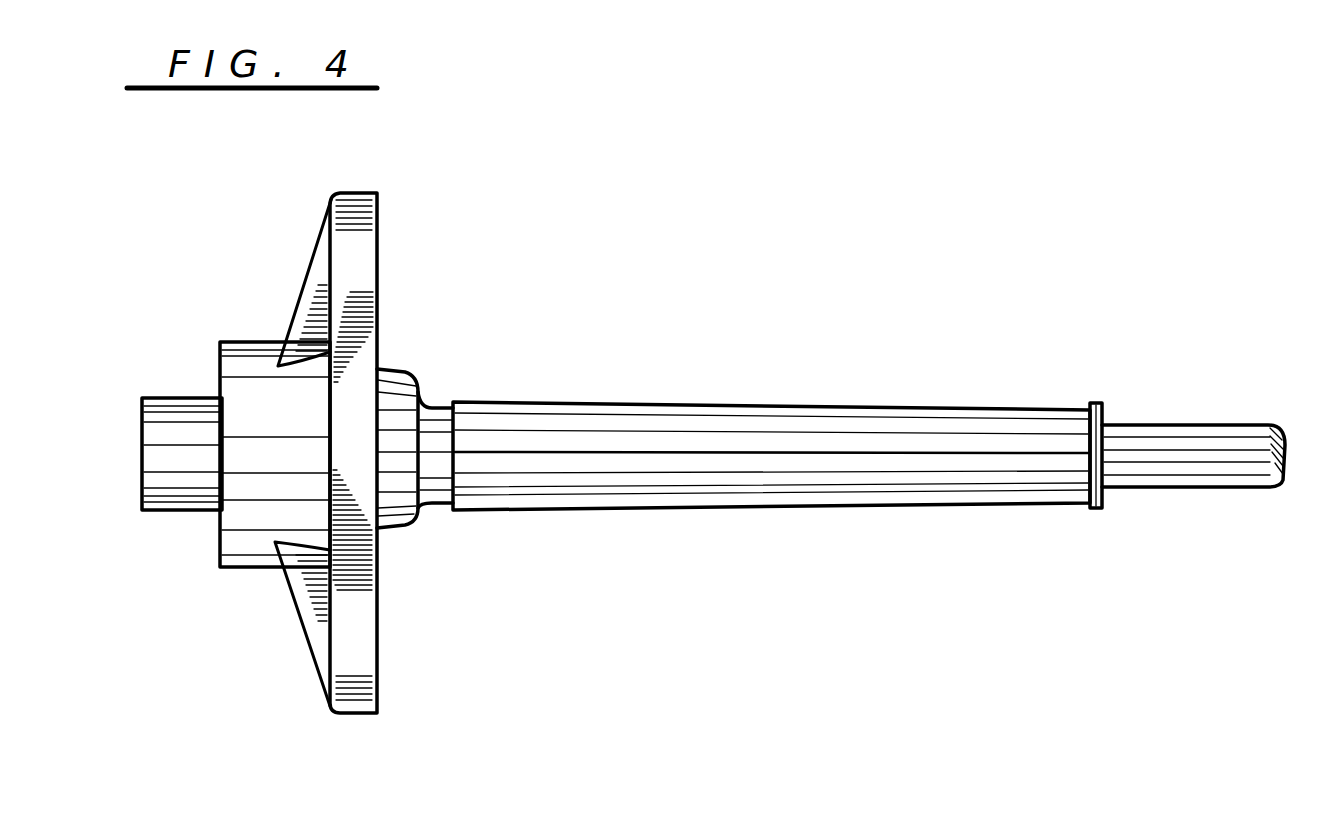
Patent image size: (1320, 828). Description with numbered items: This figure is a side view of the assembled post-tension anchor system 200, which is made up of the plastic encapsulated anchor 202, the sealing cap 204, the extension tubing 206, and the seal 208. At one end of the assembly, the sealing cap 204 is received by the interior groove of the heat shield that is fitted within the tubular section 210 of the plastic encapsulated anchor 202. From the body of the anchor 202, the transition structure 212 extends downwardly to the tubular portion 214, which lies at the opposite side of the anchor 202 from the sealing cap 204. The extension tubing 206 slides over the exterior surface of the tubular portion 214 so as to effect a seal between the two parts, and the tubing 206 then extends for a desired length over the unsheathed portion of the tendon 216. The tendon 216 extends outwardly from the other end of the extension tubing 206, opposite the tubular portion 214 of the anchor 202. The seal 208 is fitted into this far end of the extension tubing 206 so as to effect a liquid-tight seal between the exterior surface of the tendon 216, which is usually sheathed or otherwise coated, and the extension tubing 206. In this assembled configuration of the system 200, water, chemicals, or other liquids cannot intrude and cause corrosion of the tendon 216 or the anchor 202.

The assembled post-tension anchor system 200 is at (408, 262).
The plastic encapsulated anchor 202 is at (377, 293).
The sealing cap 204 is at (170, 398).
The extension tubing 206 is at (760, 405).
The seal 208 is at (1100, 508).
The tubular section 210 is at (238, 340).
The transition structure 212 is at (400, 370).
The tubular portion 214 is at (440, 505).
The tendon 216 is at (1204, 438).